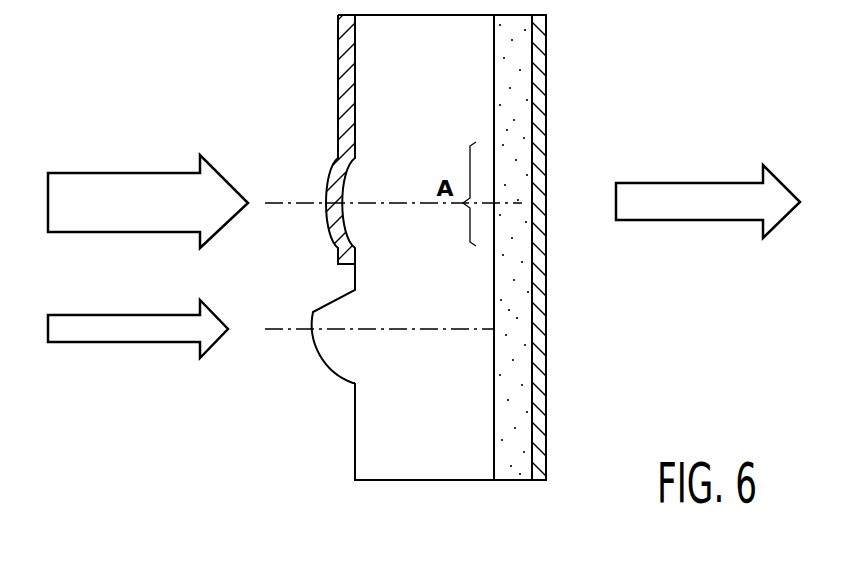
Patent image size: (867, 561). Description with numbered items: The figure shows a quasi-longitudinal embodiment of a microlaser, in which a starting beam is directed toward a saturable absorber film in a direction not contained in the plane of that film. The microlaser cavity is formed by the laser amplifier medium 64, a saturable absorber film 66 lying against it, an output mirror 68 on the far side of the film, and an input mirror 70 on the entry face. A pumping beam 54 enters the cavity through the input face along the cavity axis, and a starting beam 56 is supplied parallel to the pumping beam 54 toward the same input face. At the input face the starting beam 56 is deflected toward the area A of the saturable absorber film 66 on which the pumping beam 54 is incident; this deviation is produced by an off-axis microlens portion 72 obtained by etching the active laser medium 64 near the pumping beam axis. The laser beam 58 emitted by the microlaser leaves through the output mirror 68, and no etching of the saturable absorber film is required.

The pumping beam 54 is at (138, 177).
The starting beam 56 is at (150, 337).
The laser beam 58 is at (707, 187).
The laser amplifier medium 64 is at (383, 460).
The saturable absorber film 66 is at (520, 400).
The output mirror 68 is at (542, 63).
The input mirror 70 is at (343, 63).
The off-axis microlens portion 72 is at (337, 368).